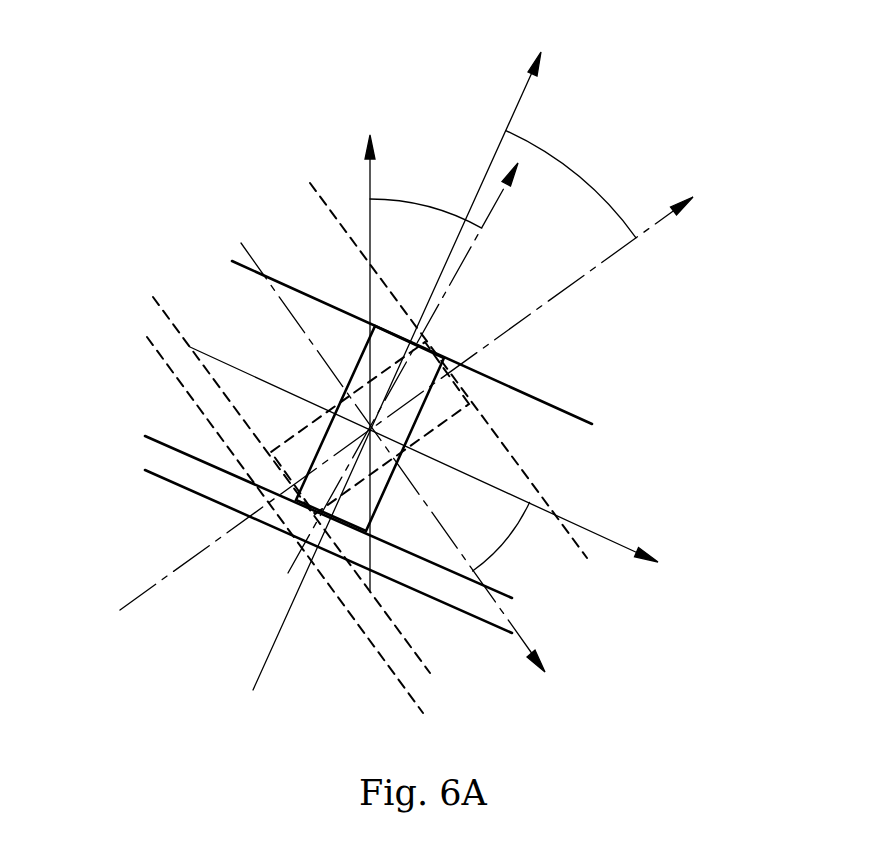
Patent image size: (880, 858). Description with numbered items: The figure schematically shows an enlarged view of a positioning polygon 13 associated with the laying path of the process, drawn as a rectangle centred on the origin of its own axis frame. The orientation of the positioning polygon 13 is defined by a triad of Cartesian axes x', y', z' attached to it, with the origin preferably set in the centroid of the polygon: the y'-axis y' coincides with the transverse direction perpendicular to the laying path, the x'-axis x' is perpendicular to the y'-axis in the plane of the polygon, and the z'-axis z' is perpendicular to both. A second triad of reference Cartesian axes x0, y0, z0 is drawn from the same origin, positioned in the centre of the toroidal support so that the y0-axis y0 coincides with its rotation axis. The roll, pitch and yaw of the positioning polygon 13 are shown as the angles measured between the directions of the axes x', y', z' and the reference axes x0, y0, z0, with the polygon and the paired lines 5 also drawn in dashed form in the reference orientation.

The positioning polygon 13 is at (358, 370).
The light beam 5 is at (180, 467).
The x'-axis x' is at (424, 454).
The y'-axis y' is at (397, 371).
The z'-axis z' is at (356, 363).
The x0-axis x0 is at (393, 465).
The y0-axis y0 is at (408, 403).
The z0-axis z0 is at (414, 368).